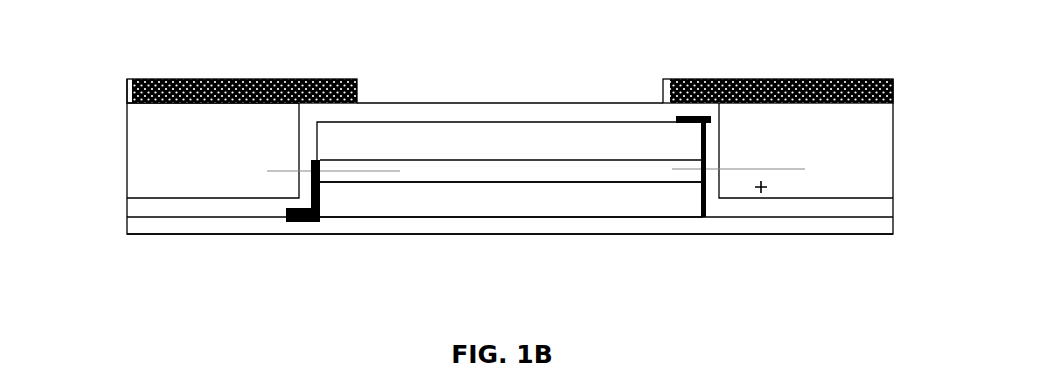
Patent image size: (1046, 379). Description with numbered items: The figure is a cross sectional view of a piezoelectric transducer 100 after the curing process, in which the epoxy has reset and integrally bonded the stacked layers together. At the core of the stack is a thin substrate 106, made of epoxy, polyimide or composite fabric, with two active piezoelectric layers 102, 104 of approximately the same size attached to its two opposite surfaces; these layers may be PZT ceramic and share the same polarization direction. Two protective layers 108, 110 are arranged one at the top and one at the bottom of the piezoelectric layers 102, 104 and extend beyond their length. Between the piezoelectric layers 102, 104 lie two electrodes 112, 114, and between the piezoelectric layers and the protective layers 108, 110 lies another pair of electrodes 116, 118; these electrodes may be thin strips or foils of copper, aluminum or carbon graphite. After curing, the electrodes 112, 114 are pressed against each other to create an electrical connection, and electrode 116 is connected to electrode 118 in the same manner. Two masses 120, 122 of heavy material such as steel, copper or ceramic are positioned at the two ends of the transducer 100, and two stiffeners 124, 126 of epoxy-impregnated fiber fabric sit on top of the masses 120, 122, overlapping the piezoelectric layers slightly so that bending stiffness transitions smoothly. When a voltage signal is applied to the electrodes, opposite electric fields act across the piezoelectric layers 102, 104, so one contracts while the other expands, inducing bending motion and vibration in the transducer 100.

The transducer 100 is at (510, 156).
The piezoelectric layer 102 is at (526, 138).
The piezoelectric layer 104 is at (483, 198).
The substrate 106 is at (443, 173).
The protective layer 108 is at (137, 208).
The protective layer 110 is at (142, 223).
The electrode 112 is at (290, 223).
The electrode 114 is at (315, 191).
The electrode 116 is at (714, 220).
The electrode 118 is at (722, 177).
The mass 120 is at (136, 138).
The mass 122 is at (875, 171).
The stiffener 124 is at (312, 79).
The stiffener 126 is at (703, 80).